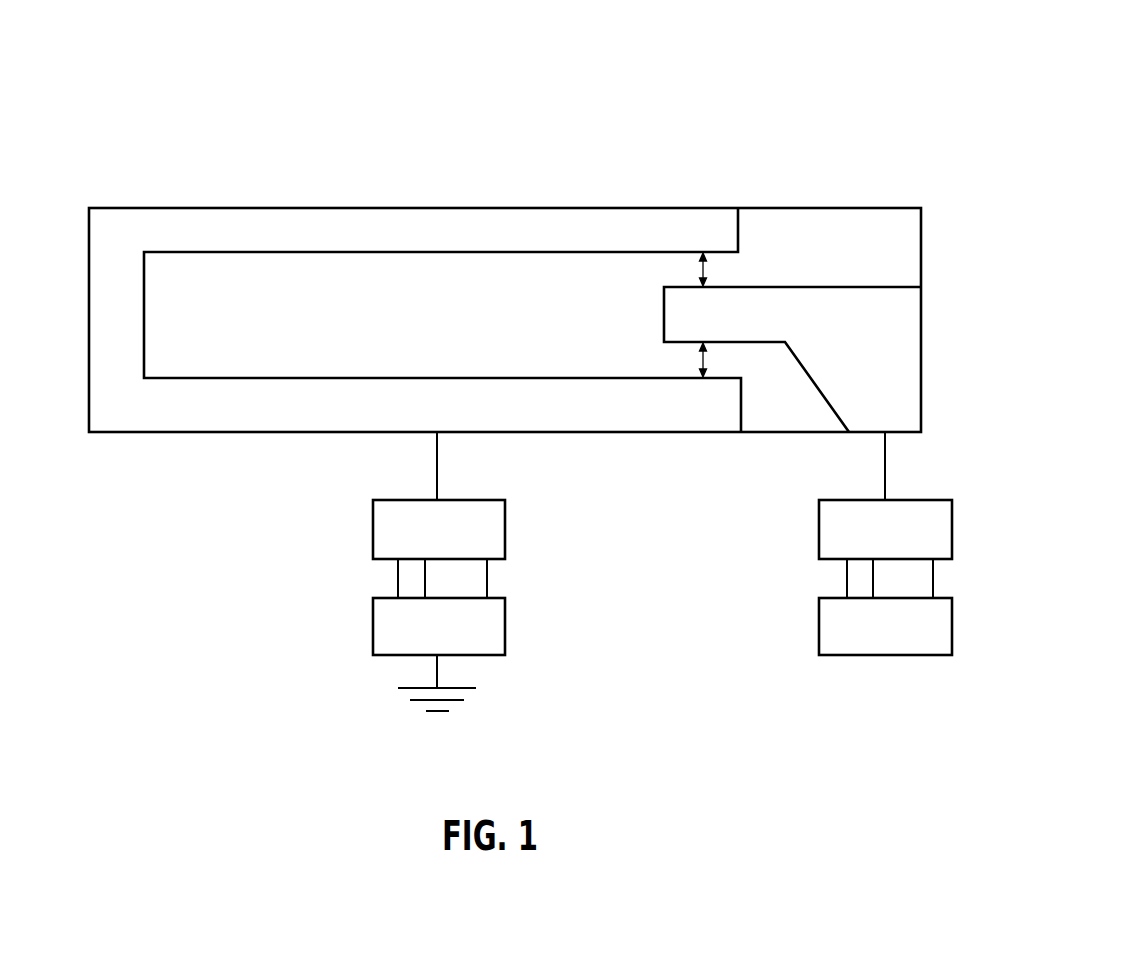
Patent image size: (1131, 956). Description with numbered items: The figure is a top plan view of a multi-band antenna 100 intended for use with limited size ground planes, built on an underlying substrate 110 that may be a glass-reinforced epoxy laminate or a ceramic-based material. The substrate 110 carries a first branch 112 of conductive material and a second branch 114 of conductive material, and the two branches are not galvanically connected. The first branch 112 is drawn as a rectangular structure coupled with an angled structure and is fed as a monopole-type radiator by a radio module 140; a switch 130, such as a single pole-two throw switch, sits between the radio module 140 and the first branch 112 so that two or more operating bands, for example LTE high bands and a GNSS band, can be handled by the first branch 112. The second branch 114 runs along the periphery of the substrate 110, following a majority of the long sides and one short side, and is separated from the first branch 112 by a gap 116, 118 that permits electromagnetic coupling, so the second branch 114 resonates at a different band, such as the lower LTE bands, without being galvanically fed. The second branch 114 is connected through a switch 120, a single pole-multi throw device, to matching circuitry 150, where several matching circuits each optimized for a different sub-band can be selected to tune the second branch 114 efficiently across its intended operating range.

The multi-band antenna 100 is at (963, 114).
The substrate 110 is at (910, 222).
The first branch 112 is at (910, 333).
The second branch 114 is at (256, 224).
The gap 116 is at (705, 271).
The gap 118 is at (707, 362).
The switch 120 is at (488, 541).
The switch 130 is at (935, 532).
The radio module 140 is at (940, 629).
The matching circuitry 150 is at (493, 634).